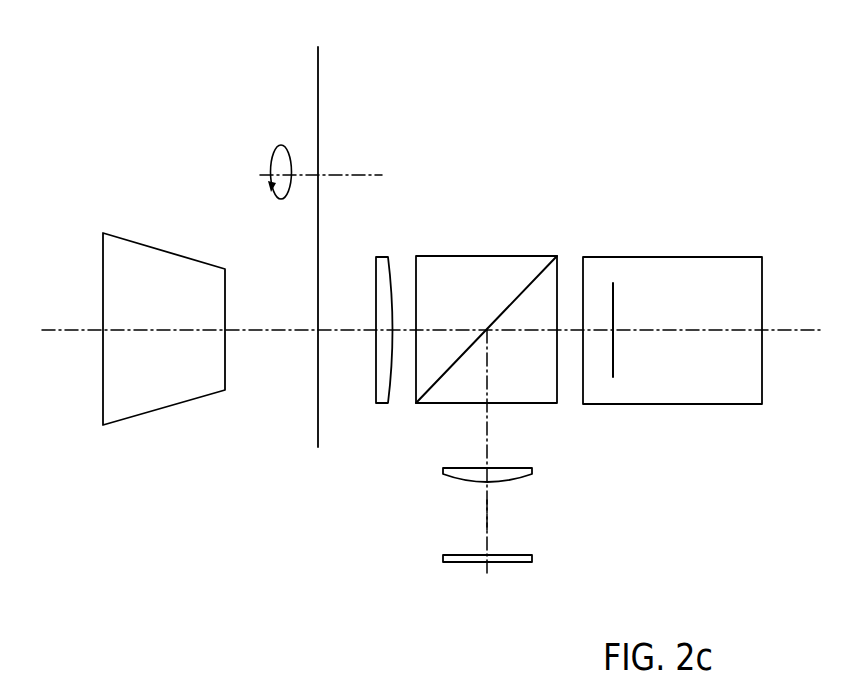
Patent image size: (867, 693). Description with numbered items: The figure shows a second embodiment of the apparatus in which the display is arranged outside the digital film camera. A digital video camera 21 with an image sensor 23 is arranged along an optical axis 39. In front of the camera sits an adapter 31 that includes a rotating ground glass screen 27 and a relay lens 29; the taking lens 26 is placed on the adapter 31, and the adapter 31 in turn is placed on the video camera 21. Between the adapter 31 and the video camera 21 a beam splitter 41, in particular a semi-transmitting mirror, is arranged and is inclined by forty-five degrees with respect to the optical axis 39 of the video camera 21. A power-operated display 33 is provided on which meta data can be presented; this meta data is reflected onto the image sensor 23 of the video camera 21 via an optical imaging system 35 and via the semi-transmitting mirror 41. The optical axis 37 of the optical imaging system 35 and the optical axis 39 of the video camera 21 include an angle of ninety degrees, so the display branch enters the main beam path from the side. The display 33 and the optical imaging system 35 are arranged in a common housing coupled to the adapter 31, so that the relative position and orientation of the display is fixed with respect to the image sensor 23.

The digital video camera 21 is at (695, 255).
The image sensor 23 is at (615, 310).
The taking lens 26 is at (140, 257).
The rotating ground glass screen 27 is at (318, 115).
The relay lens 29 is at (383, 255).
The adapter 31 is at (366, 146).
The power-operated display 33 is at (532, 558).
The optical imaging system 35 is at (532, 472).
The optical axis of the optical imaging system 37 is at (485, 512).
The optical axis of the video camera 39 is at (60, 332).
The beam splitter 41 is at (467, 255).